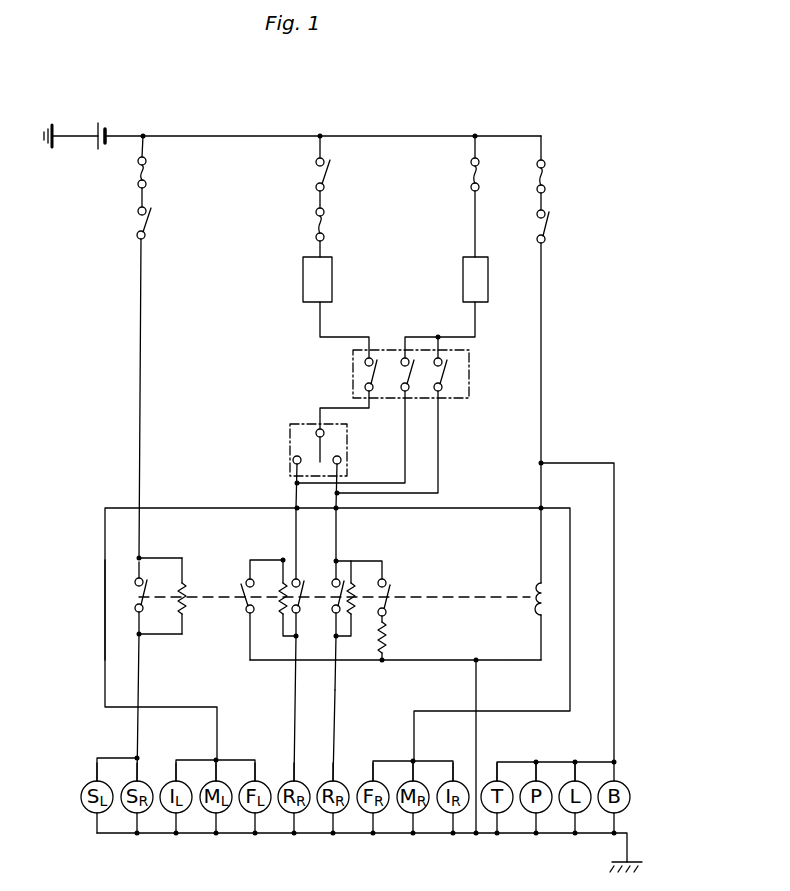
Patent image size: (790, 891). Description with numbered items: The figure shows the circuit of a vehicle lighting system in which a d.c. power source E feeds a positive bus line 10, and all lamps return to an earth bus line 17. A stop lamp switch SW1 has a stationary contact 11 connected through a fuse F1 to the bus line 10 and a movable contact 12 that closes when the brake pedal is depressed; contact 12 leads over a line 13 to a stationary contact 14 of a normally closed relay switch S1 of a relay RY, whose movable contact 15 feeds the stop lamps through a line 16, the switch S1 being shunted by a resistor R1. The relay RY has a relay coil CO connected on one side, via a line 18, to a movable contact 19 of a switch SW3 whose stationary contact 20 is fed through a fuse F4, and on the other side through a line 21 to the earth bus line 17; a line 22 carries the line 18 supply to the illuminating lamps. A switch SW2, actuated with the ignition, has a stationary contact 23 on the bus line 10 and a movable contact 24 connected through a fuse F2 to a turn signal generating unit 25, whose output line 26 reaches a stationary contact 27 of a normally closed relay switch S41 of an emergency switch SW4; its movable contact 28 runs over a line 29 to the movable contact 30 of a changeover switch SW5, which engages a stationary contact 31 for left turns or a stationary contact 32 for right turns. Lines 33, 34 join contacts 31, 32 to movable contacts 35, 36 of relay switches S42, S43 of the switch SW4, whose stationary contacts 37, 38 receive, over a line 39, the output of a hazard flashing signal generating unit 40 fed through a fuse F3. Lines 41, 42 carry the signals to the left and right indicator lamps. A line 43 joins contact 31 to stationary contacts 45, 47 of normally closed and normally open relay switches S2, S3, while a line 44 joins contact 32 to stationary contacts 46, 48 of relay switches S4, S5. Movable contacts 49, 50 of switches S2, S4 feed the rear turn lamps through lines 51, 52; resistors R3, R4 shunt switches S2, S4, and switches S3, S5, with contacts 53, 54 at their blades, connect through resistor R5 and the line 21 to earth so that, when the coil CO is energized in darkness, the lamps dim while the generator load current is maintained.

The d.c. power source E is at (106, 132).
The positive bus line 10 is at (275, 136).
The fuse F1 is at (146, 175).
The stationary contact 11 is at (138, 211).
The movable contact 12 is at (137, 235).
The stop lamp switch SW1 is at (159, 235).
The line 13 is at (139, 391).
The stationary contact 23 is at (316, 162).
The movable contact 24 is at (316, 187).
The switch SW2 is at (334, 181).
The fuse F2 is at (325, 237).
The turn signal generating unit 25 is at (332, 283).
The line 26 is at (320, 326).
The stationary contact 27 is at (365, 362).
The movable contact 28 is at (365, 387).
The relay switch S41 is at (382, 362).
The line 29 is at (320, 408).
The movable contact 30 is at (310, 432).
The changeover switch SW5 is at (343, 437).
The stationary contact 31 is at (293, 460).
The stationary contact 32 is at (342, 463).
The line 33 is at (406, 452).
The line 34 is at (438, 472).
The fuse F3 is at (476, 175).
The line 41 is at (475, 242).
The hazard flashing signal generating unit 40 is at (488, 288).
The line 39 is at (475, 318).
The stationary contact 37 is at (404, 356).
The stationary contact 38 is at (441, 360).
The movable contact 35 is at (404, 392).
The movable contact 36 is at (443, 389).
The relay switch S42 is at (416, 396).
The relay switch S43 is at (446, 396).
The switch SW4 is at (469, 374).
The fuse F4 is at (545, 186).
The stationary contact 20 is at (545, 213).
The movable contact 19 is at (546, 242).
The switch SW3 is at (558, 237).
The line 18 is at (541, 386).
The line 42 is at (569, 564).
The relay RY is at (438, 571).
The stationary contact 14 is at (140, 578).
The relay switch S1 is at (150, 580).
The resistor R1 is at (184, 608).
The movable contact 15 is at (138, 635).
The line 16 is at (138, 671).
The stationary contact 47 is at (248, 578).
The fixed contact 53 is at (248, 614).
The relay switch S3 is at (248, 604).
The stationary contact 45 is at (283, 560).
The resistor R3 is at (280, 614).
The line 43 is at (293, 534).
The stationary contact 46 is at (335, 537).
The relay switch S2 is at (309, 583).
The movable contact 49 is at (310, 642).
The line 44 is at (339, 527).
The relay switch S4 is at (341, 570).
The resistor R4 is at (348, 614).
The stationary contact 48 is at (386, 578).
The relay switch S5 is at (399, 585).
The fixed contact 54 is at (387, 613).
The resistor R5 is at (387, 642).
The relay coil CO is at (534, 594).
The movable contact 50 is at (334, 656).
The line 52 is at (335, 706).
The line 51 is at (294, 700).
The line 21 is at (484, 662).
The line 22 is at (614, 718).
The earth bus line 17 is at (358, 836).